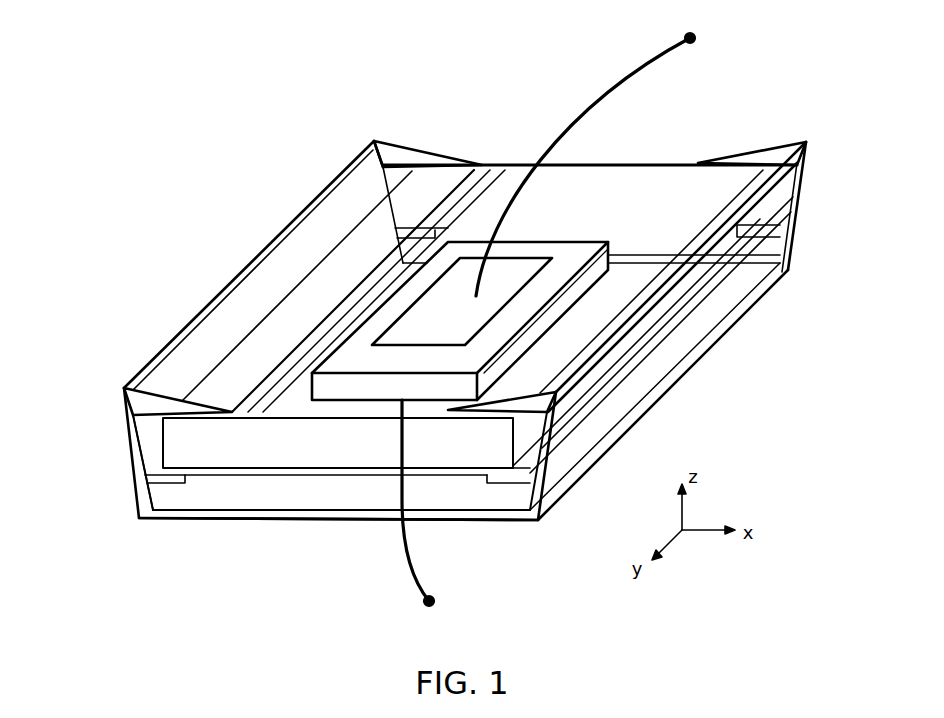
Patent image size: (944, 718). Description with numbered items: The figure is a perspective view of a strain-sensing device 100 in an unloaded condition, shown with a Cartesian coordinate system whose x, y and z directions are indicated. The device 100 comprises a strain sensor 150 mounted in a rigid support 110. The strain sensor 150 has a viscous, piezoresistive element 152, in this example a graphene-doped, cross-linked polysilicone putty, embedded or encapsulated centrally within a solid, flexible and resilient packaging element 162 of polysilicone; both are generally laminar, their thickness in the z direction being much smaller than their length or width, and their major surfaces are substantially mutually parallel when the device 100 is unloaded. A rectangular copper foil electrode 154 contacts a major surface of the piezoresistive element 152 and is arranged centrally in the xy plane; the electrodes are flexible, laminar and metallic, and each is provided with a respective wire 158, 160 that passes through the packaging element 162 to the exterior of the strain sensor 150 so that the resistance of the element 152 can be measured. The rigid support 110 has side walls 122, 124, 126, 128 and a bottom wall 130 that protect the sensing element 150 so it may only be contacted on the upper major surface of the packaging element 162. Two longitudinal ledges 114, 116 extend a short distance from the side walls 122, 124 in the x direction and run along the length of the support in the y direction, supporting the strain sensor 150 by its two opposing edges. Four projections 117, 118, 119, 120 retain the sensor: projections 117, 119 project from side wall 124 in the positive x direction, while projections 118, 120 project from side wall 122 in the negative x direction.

The strain-sensing device 100 is at (197, 163).
The rigid support 110 is at (800, 213).
The longitudinal ledge 114 is at (205, 478).
The longitudinal ledge 116 is at (495, 475).
The projection 117 is at (410, 150).
The projection 118 is at (768, 148).
The projection 119 is at (153, 418).
The projection 120 is at (482, 418).
The side wall 122 is at (722, 305).
The side wall 124 is at (180, 363).
The side wall 126 is at (785, 187).
The side wall 128 is at (351, 522).
The bottom wall 130 is at (364, 503).
The strain sensor 150 is at (232, 340).
The viscous, piezoresistive element 152 is at (332, 388).
The copper foil electrode 154 is at (405, 300).
The wire 158 is at (634, 70).
The wire 160 is at (414, 578).
The packaging element 162 is at (600, 176).